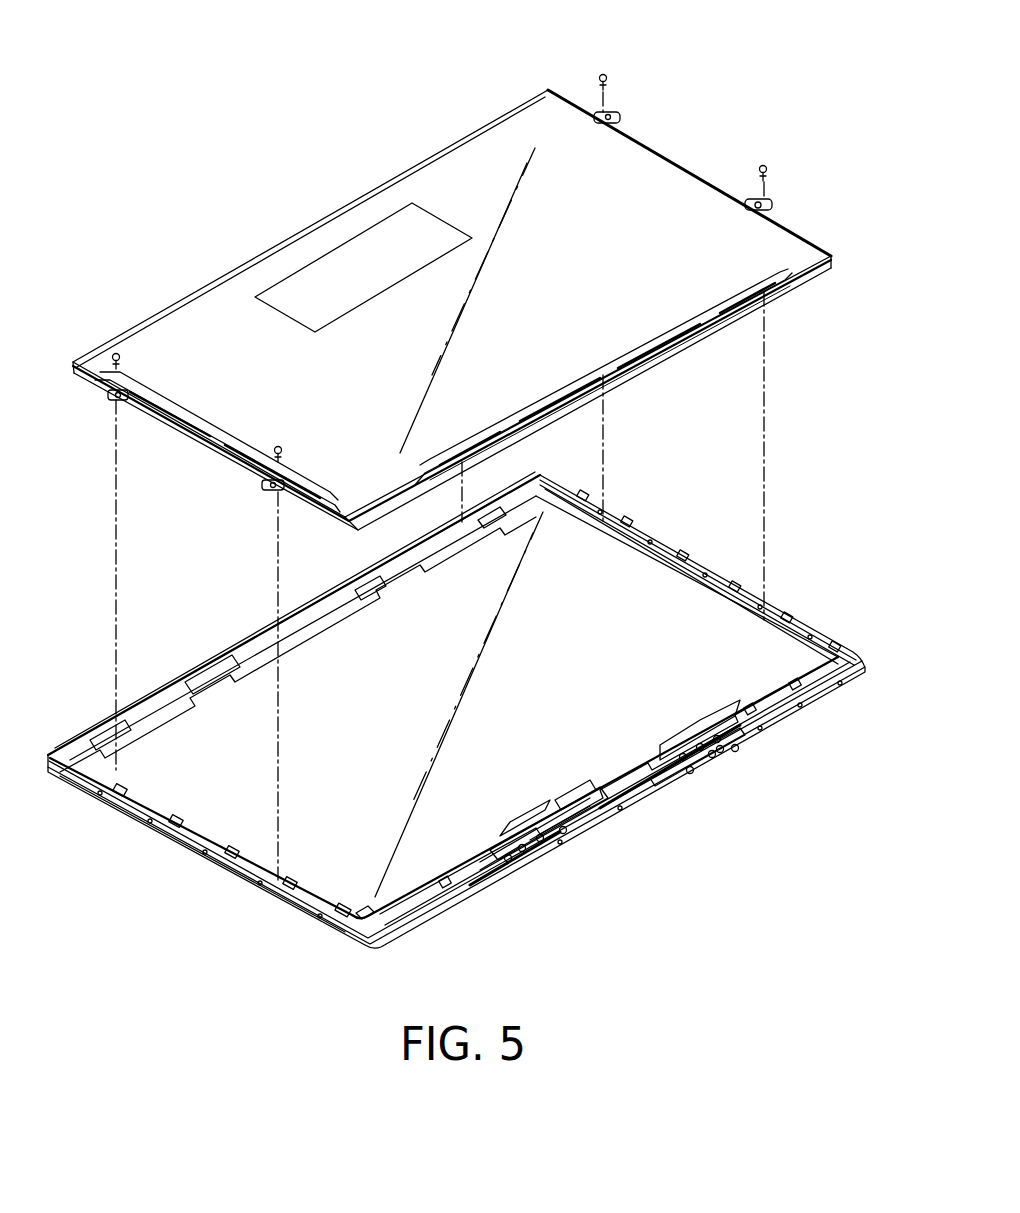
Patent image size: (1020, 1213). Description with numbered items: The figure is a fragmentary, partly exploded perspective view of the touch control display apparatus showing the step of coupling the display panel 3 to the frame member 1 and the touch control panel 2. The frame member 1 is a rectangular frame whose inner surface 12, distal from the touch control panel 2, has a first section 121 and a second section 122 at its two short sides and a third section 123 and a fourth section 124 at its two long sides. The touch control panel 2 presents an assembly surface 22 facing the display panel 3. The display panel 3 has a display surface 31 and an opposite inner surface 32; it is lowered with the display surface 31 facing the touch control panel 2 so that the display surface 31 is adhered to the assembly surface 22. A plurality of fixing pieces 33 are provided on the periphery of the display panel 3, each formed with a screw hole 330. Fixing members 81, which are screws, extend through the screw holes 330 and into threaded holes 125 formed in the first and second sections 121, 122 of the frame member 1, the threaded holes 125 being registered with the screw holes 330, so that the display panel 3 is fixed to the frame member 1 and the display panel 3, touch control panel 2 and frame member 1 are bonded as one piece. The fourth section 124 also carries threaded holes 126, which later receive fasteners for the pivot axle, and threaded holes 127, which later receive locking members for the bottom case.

The frame member 1 is at (200, 887).
The inner surface 12 is at (655, 780).
The first section 121 is at (160, 835).
The second section 122 is at (683, 555).
The third section 123 is at (205, 675).
The fourth section 124 is at (590, 835).
The threaded holes 125 is at (770, 610).
The threaded holes 126 is at (712, 758).
The threaded holes 127 is at (738, 749).
The touch control panel 2 is at (622, 572).
The assembly surface 22 is at (770, 660).
The display panel 3 is at (663, 118).
The display surface 31 is at (658, 363).
The inner surface 32 is at (680, 207).
The fixing pieces 33 is at (770, 208).
The screw holes 330 is at (775, 207).
The fixing members 81 is at (603, 74).